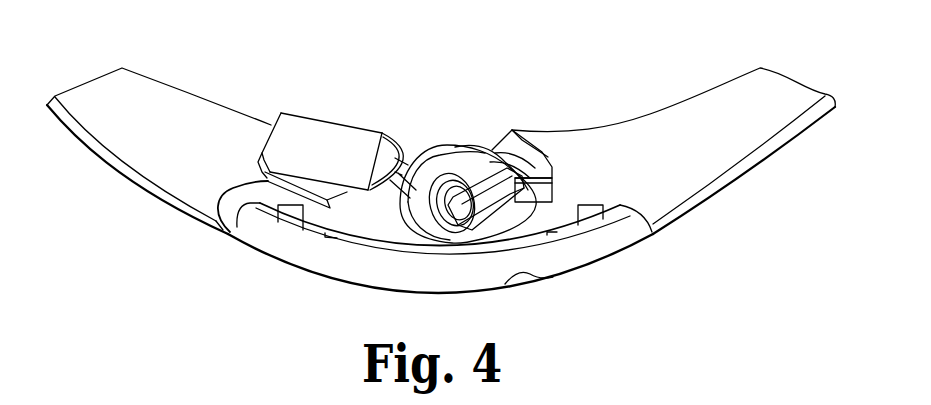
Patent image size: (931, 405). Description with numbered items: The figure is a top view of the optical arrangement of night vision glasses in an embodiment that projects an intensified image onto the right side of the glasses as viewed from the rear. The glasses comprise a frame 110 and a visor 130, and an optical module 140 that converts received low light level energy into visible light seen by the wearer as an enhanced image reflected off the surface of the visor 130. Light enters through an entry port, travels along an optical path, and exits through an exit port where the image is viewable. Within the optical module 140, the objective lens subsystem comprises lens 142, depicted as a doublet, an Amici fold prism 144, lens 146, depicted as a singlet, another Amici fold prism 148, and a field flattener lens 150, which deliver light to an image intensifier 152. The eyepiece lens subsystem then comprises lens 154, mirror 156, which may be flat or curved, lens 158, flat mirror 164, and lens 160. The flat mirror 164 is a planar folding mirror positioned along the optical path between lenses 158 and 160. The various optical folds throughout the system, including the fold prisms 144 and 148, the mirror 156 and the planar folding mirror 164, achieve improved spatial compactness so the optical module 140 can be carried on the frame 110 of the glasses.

The frame 110 is at (262, 264).
The visor 130 is at (186, 150).
The optical module 140 is at (472, 162).
The lens 142 is at (557, 190).
The Amici fold prism 144 is at (517, 148).
The lens 146 is at (490, 148).
The Amici fold prism 148 is at (507, 203).
The field flattener lens 150 is at (440, 223).
The image intensifier 152 is at (400, 217).
The lens 154 is at (430, 143).
The mirror 156 is at (462, 140).
The lens 158 is at (401, 138).
The lens 160 is at (218, 222).
The flat mirror 164 is at (318, 115).